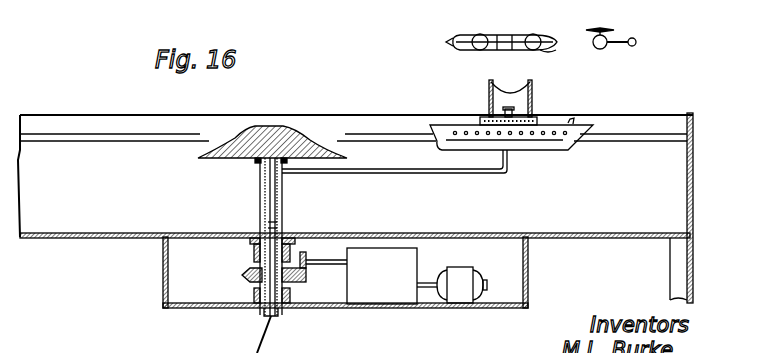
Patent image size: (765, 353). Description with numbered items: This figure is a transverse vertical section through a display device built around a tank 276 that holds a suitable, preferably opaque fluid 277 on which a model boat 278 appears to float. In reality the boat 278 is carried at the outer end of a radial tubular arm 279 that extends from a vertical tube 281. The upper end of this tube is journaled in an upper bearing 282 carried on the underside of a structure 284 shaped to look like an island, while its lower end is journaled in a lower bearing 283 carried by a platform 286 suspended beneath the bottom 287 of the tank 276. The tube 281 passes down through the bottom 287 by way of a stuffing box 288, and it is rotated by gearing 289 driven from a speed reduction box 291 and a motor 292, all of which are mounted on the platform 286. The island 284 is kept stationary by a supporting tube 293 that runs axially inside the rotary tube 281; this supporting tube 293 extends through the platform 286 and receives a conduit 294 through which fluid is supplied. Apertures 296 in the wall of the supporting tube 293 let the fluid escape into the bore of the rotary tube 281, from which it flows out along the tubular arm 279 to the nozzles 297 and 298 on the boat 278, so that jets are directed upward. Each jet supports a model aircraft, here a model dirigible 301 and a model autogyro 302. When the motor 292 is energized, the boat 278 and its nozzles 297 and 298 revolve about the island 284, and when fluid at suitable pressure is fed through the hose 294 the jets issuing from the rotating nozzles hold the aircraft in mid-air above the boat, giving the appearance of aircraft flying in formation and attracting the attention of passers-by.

The tank 276 is at (693, 200).
The fluid 277 is at (668, 160).
The model boat 278 is at (468, 124).
The tubular arm 279 is at (473, 175).
The vertical tube 281 is at (285, 186).
The upper bearing 282 is at (257, 163).
The lower bearing 283 is at (262, 300).
The island structure 284 is at (286, 138).
The platform 286 is at (506, 309).
The tank bottom 287 is at (588, 239).
The stuffing box 288 is at (257, 246).
The gearing 289 is at (307, 279).
The speed reduction box 291 is at (362, 288).
The motor 292 is at (462, 293).
The supporting tube 293 is at (276, 204).
The conduit 294 is at (274, 331).
The apertures 296 is at (280, 225).
The nozzle 297 is at (493, 81).
The nozzle 298 is at (570, 121).
The model dirigible 301 is at (521, 33).
The model autogyro 302 is at (618, 36).